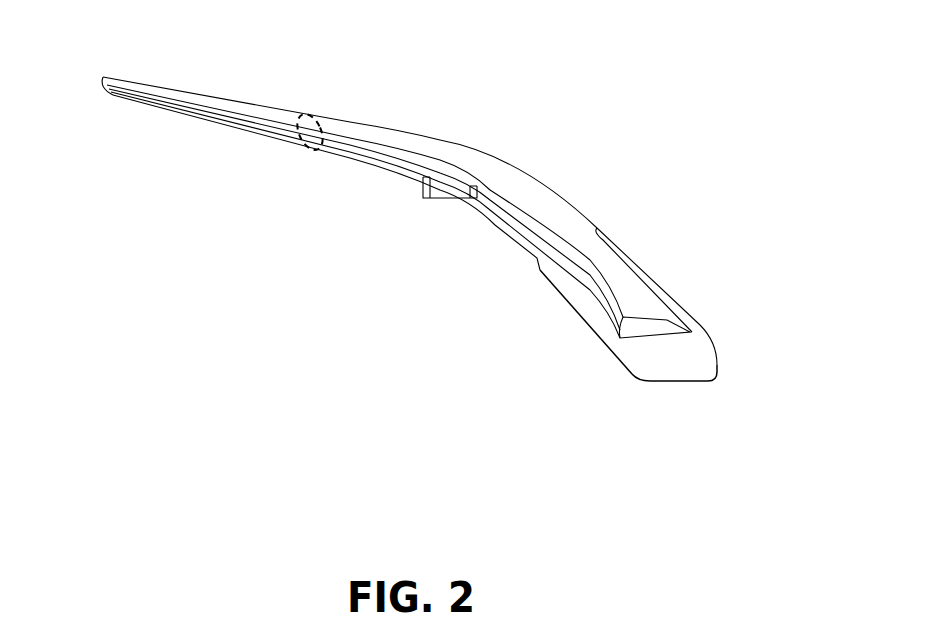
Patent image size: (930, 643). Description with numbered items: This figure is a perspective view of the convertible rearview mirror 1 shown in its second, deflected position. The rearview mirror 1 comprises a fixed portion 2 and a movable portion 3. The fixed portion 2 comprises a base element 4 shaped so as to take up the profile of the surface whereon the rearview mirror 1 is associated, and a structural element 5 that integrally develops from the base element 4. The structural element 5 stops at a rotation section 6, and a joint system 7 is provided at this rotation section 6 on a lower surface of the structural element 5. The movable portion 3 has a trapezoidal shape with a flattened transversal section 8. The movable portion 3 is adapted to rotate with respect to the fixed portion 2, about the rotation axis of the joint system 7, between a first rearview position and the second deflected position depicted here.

The convertible rearview mirror 1 is at (683, 76).
The fixed portion 2 is at (628, 240).
The movable portion 3 is at (153, 68).
The base element 4 is at (700, 355).
The structural element 5 is at (580, 235).
The rotation section 6 is at (473, 160).
The joint system 7 is at (433, 193).
The flattened transversal section 8 is at (299, 135).